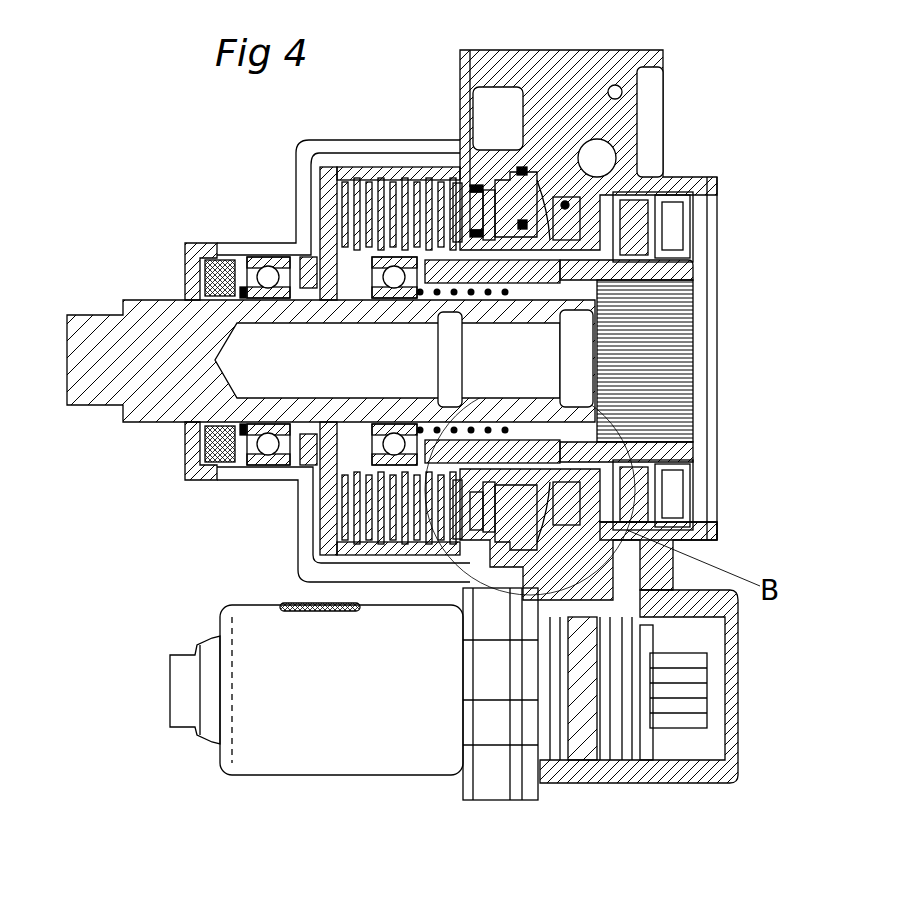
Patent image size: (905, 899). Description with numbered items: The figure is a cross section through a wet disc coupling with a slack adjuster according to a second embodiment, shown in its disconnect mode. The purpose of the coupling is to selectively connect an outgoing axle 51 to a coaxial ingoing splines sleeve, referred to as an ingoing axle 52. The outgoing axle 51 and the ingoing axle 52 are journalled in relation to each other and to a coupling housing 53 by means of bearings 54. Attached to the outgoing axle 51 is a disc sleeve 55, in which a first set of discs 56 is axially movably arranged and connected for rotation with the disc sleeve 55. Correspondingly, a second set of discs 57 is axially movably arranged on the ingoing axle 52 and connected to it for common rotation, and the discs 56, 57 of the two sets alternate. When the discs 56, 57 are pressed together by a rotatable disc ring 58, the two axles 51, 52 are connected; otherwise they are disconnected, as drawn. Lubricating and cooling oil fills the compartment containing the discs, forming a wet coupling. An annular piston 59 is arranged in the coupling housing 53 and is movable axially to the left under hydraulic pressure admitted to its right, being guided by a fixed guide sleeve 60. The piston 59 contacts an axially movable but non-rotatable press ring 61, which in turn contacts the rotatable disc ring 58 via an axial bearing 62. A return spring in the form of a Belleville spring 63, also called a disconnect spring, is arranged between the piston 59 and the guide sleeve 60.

The outgoing axle 51 is at (162, 322).
The ingoing axle 52 is at (690, 272).
The coupling housing 53 is at (303, 172).
The bearings 54 is at (385, 262).
The disc sleeve 55 is at (347, 172).
The first set of discs 56 is at (392, 180).
The second set of discs 57 is at (419, 178).
The rotatable disc ring 58 is at (460, 195).
The annular piston 59 is at (565, 212).
The guide sleeve 60 is at (522, 190).
The press ring 61 is at (492, 205).
The axial bearing 62 is at (477, 205).
The Belleville spring 63 is at (542, 218).